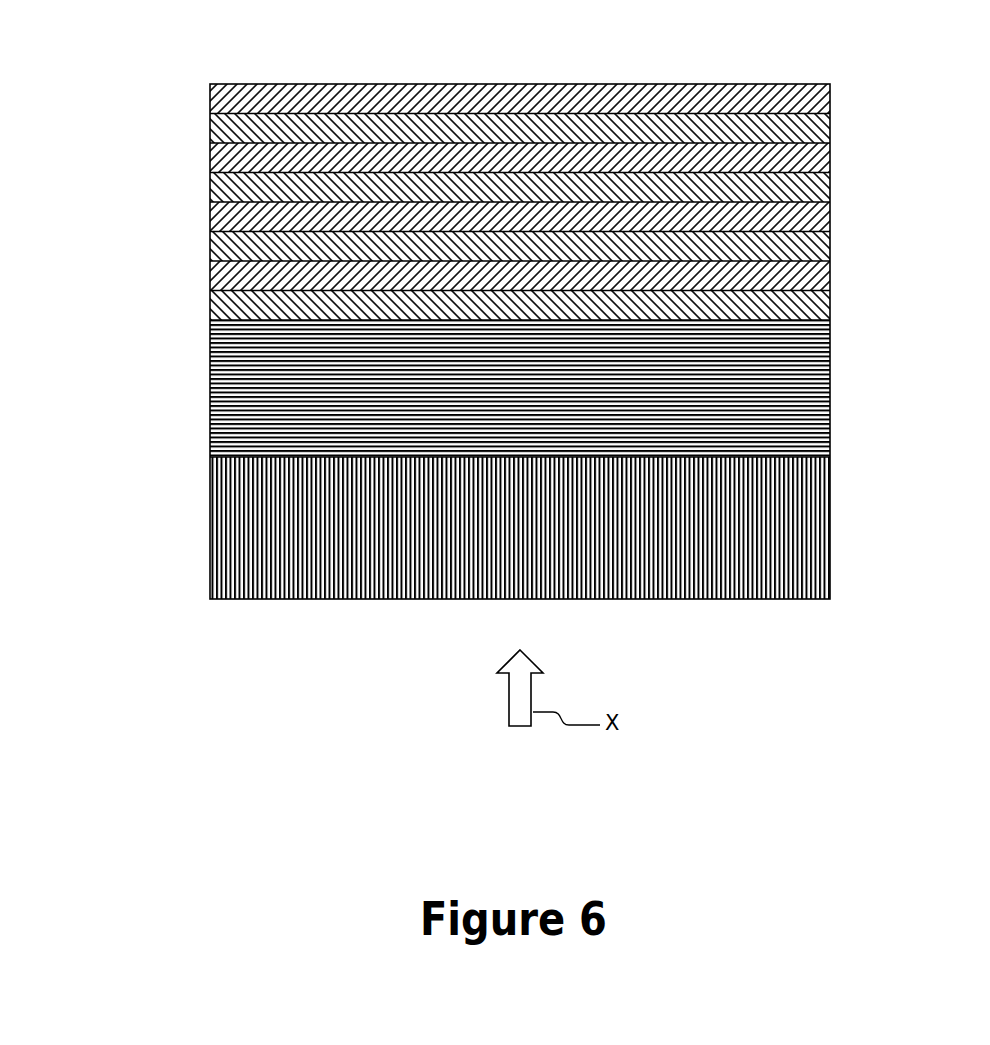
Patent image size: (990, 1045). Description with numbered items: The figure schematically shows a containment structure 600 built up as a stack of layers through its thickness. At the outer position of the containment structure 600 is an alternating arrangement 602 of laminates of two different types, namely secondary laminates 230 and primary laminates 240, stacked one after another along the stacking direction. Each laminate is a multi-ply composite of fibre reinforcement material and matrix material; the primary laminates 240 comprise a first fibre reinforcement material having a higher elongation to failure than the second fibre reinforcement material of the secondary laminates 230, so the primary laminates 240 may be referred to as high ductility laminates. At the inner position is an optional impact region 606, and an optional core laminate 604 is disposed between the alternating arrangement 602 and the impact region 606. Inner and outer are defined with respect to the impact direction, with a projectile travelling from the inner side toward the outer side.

The containment structure 600 is at (502, 312).
The alternating arrangement 602 is at (502, 202).
The secondary laminate 230 is at (210, 88).
The primary laminate 240 is at (210, 126).
The core laminate 604 is at (830, 372).
The impact region 606 is at (830, 517).